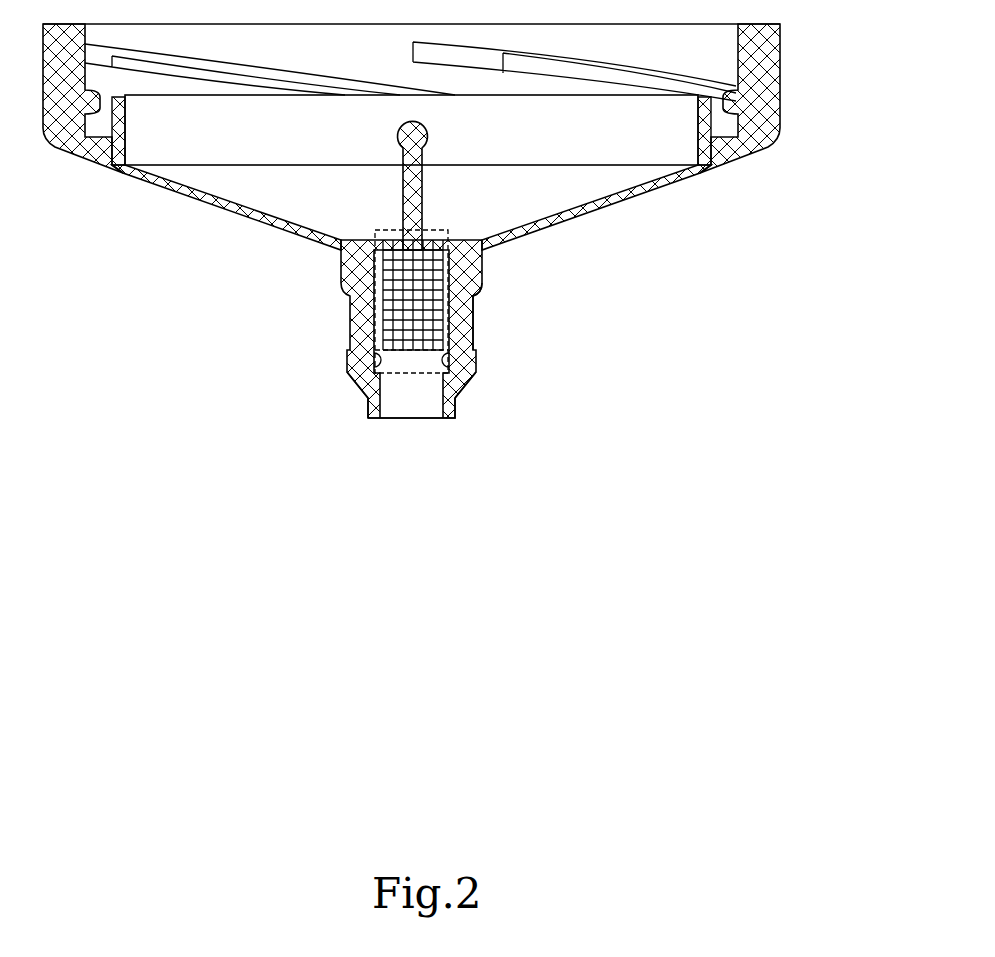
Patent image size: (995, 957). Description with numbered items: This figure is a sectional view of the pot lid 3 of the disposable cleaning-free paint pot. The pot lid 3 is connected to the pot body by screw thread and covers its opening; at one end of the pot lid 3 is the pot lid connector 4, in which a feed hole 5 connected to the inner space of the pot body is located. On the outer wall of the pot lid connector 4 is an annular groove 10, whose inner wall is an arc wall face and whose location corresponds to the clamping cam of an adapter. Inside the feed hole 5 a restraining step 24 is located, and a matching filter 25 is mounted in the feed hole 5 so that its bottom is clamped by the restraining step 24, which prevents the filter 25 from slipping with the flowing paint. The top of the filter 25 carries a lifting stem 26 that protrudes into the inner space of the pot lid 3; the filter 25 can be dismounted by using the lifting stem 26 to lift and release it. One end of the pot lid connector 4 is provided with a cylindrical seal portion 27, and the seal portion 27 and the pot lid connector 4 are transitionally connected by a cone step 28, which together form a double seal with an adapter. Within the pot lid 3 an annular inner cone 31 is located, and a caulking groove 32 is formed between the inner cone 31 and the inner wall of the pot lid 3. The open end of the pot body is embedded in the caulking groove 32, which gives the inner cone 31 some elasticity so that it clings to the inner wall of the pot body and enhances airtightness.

The pot lid 3 is at (762, 72).
The caulking groove 32 is at (773, 147).
The annular inner cone 31 is at (703, 130).
The lifting stem 26 is at (403, 184).
The pot lid connector 4 is at (362, 278).
The filter 25 is at (408, 307).
The annular groove 10 is at (473, 298).
The feed hole 5 is at (472, 333).
The cone step 28 is at (468, 383).
The seal portion 27 is at (457, 413).
The restraining step 24 is at (365, 385).